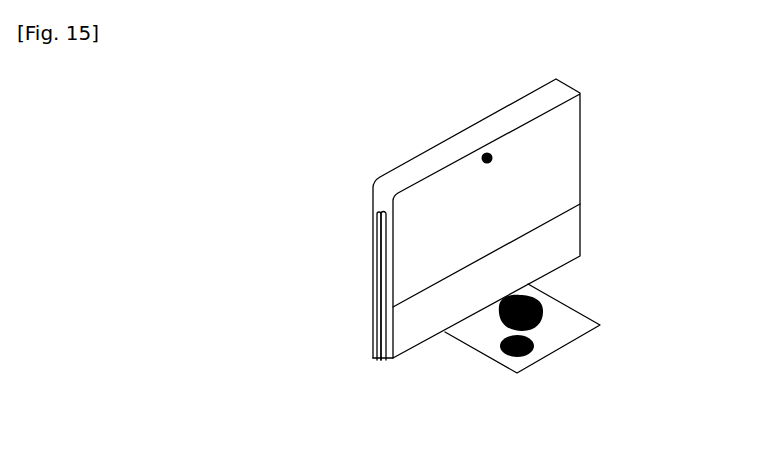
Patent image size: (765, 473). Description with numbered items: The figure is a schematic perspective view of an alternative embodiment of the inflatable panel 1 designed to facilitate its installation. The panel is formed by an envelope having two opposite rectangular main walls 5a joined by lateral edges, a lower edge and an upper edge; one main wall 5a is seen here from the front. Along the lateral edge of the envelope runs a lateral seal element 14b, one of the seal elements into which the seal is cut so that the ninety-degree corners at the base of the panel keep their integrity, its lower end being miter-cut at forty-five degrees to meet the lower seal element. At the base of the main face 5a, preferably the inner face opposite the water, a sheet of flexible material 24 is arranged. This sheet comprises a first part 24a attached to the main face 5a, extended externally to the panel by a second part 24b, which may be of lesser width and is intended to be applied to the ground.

The display device 1 is at (368, 143).
The main wall 5a is at (552, 152).
The lateral seal element 14b is at (371, 272).
The sheet of flexible material 24 is at (504, 250).
The first part 24a is at (557, 240).
The second part 24b is at (472, 330).